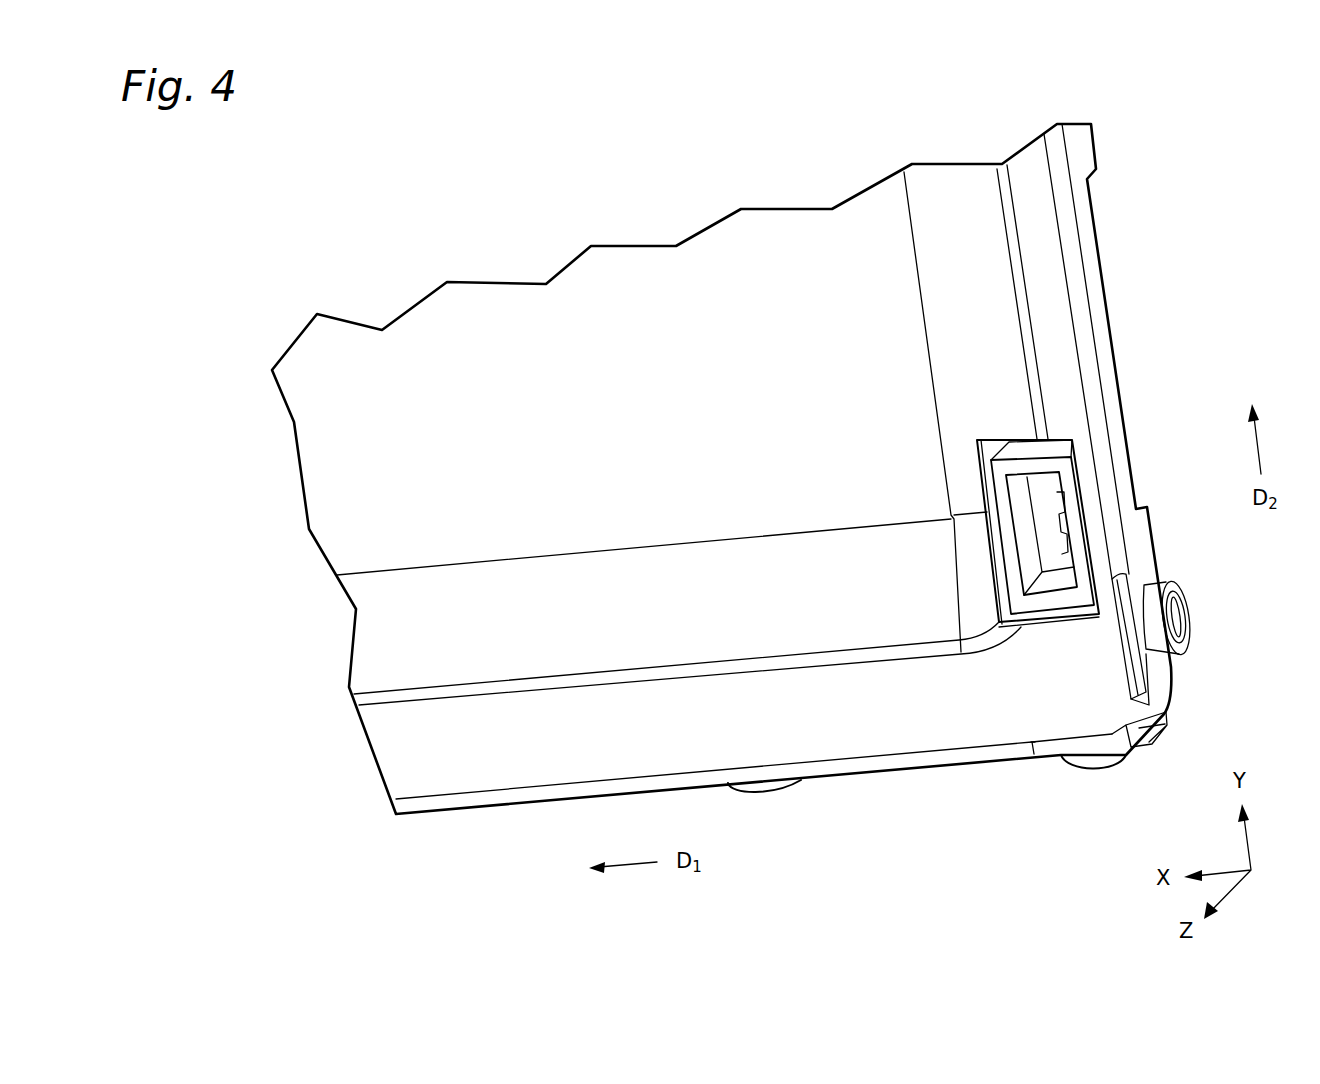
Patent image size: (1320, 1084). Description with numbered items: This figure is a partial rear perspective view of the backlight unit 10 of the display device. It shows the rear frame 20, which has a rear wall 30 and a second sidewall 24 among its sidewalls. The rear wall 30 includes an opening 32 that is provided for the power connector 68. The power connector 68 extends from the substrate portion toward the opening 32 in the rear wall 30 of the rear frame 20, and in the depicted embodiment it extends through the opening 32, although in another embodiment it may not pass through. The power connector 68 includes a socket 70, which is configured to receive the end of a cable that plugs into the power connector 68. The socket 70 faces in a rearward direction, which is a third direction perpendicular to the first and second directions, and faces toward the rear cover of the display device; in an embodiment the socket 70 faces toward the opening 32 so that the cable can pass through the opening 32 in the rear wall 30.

The backlight unit 10 is at (481, 142).
The rear frame 20 is at (327, 812).
The second sidewall 24 is at (1100, 322).
The rear wall 30 is at (366, 493).
The opening 32 is at (1008, 435).
The power connector 68 is at (1050, 440).
The socket 70 is at (1047, 503).